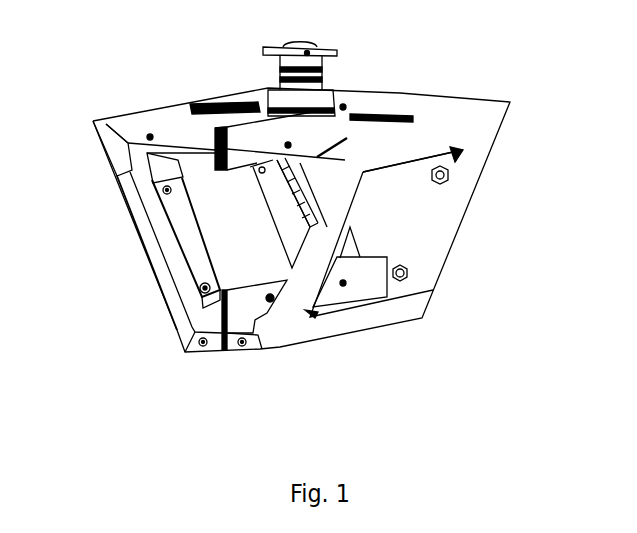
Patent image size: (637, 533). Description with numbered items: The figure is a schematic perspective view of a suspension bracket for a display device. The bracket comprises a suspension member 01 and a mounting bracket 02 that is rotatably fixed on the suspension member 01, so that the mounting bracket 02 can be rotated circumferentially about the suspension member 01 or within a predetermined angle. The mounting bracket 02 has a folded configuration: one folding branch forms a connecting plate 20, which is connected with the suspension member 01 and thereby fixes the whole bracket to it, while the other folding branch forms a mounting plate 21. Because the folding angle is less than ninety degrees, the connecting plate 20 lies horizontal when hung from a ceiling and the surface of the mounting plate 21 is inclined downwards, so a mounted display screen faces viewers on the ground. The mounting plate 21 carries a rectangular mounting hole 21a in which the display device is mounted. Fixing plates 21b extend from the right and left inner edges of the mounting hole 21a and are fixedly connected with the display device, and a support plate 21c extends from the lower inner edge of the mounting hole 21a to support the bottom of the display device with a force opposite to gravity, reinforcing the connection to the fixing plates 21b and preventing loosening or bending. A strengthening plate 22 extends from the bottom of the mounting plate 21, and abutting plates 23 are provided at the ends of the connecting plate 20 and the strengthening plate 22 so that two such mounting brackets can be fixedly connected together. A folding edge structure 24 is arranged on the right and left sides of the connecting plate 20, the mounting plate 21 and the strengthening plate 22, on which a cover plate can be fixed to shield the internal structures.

The suspension member 01 is at (330, 48).
The mounting bracket 02 is at (510, 102).
The connecting plate 20 is at (428, 98).
The mounting plate 21 is at (398, 310).
The mounting hole 21a is at (396, 192).
The fixing plate 21b is at (407, 223).
The support plate 21c is at (347, 303).
The strengthening plate 22 is at (247, 355).
The abutting plate 23 is at (238, 313).
The folding edge structure 24 is at (123, 145).